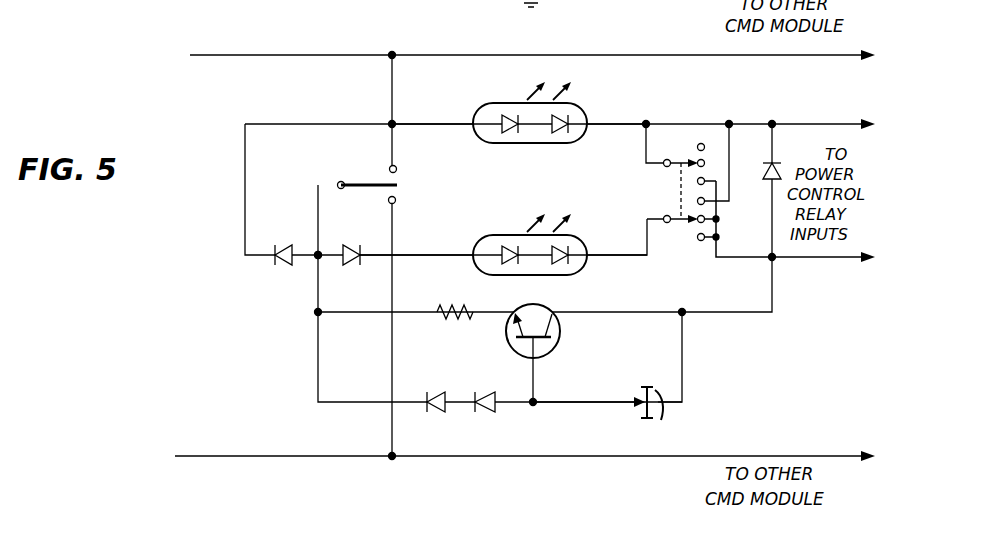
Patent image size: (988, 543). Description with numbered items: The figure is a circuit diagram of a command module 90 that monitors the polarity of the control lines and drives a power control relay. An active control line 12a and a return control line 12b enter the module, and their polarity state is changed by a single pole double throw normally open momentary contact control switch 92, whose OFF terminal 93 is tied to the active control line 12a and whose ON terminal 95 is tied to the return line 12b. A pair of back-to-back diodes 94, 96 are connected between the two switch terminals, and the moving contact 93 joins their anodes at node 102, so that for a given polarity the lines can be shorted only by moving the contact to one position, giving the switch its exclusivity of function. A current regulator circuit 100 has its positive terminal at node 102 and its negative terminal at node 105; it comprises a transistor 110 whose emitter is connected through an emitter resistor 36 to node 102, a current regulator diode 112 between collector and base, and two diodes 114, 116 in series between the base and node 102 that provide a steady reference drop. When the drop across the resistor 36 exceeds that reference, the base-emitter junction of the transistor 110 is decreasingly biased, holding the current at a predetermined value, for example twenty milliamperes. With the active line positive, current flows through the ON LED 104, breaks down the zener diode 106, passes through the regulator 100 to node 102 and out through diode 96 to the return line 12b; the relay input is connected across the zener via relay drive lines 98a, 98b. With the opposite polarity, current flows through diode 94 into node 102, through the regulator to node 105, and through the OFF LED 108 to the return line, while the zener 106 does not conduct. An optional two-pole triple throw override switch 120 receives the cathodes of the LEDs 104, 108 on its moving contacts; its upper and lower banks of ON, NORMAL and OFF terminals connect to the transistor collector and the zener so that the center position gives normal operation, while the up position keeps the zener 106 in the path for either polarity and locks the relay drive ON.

The active control line 12a is at (214, 57).
The return control line 12b is at (206, 424).
The emitter resistor 36 is at (438, 316).
The command module 90 is at (162, 293).
The control switch 92 is at (382, 178).
The switch terminal and moving contact 93 is at (340, 181).
The diode 94 is at (294, 222).
The ON terminal 95 is at (395, 204).
The diode 96 is at (362, 262).
The relay drive line 98a is at (450, 102).
The relay drive line 98b is at (459, 254).
The current regulator circuit 100 is at (540, 410).
The node 102 is at (321, 252).
The ON LED 104 is at (497, 82).
The node 105 is at (770, 262).
The zener diode 106 is at (780, 163).
The OFF LED 108 is at (480, 275).
The transistor 110 is at (562, 333).
The current regulator diode 112 is at (661, 418).
The diode 114 is at (510, 378).
The diode 116 is at (436, 398).
The override switch 120 is at (650, 199).